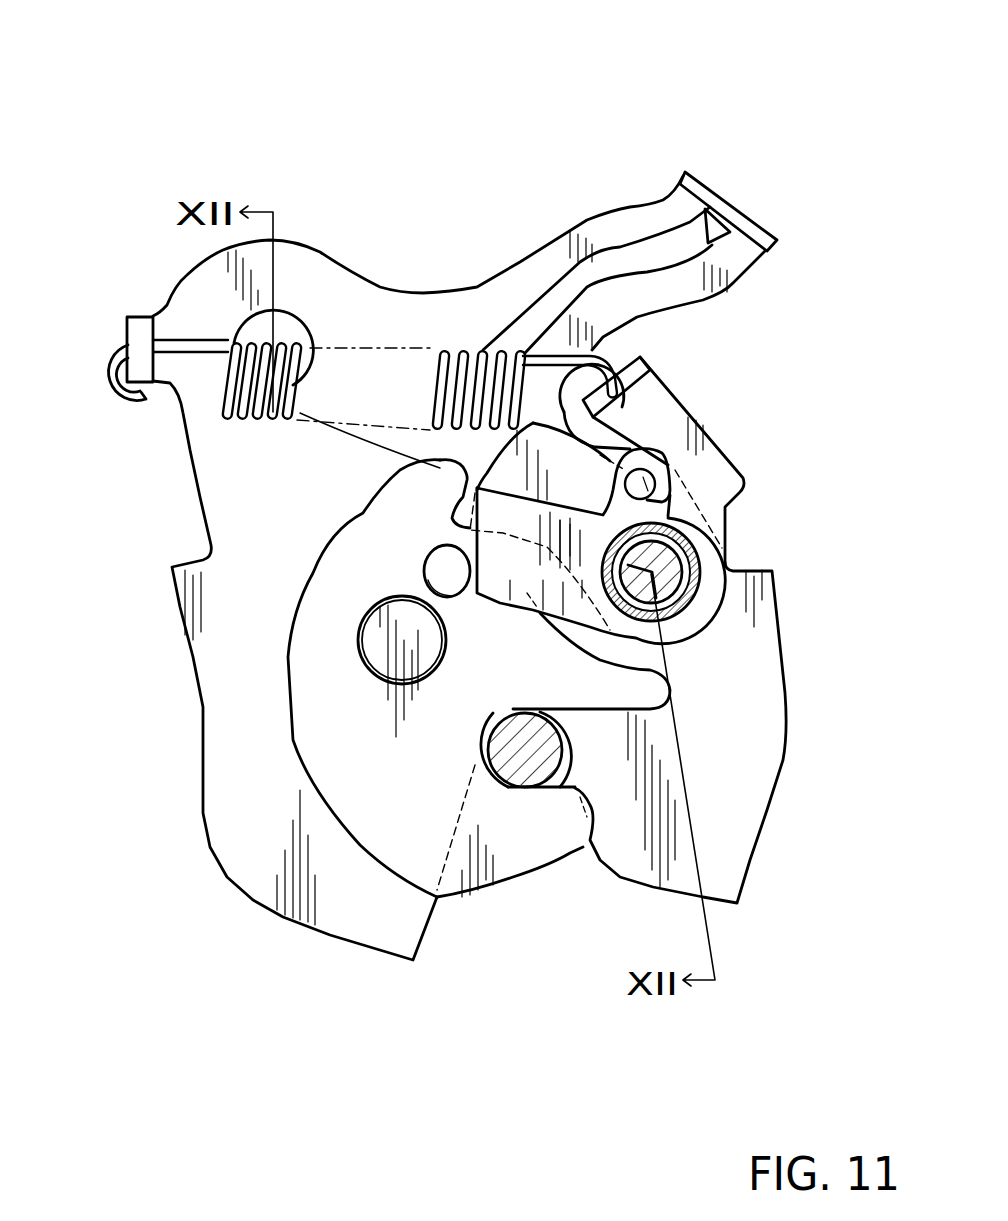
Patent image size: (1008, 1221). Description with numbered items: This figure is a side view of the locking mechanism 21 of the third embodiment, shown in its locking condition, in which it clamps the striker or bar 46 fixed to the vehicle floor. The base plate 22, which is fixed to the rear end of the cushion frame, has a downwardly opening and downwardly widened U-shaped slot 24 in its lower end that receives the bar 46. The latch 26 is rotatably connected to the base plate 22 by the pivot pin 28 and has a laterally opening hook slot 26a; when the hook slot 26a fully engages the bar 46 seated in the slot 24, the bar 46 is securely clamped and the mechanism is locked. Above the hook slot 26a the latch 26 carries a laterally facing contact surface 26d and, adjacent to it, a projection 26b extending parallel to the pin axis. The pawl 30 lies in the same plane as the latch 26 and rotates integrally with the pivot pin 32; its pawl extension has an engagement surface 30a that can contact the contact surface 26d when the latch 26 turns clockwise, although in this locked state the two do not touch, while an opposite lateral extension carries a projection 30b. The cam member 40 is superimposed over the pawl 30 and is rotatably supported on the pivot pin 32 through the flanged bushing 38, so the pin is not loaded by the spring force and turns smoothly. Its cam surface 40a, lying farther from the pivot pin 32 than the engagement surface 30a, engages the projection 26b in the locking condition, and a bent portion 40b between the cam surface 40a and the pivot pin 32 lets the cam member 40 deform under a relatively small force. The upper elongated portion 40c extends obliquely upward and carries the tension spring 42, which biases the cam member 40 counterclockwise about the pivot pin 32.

The locking mechanism 21 is at (132, 94).
The base plate 22 is at (240, 496).
The U-shaped slot 24 is at (563, 790).
The latch 26 is at (330, 775).
The hook slot 26a is at (485, 733).
The projection 26b is at (440, 571).
The contact surface 26d is at (437, 488).
The pivot pin 28 is at (390, 653).
The pawl 30 is at (570, 465).
The engagement surface 30a is at (460, 488).
The projection 30b is at (642, 470).
The pivot pin 32 is at (662, 572).
The flanged bushing 38 is at (683, 610).
The cam member 40 is at (697, 525).
The cam surface 40a is at (465, 537).
The bent portion 40b is at (553, 573).
The upper elongated portion 40c is at (663, 413).
The tension spring 42 is at (472, 347).
The bar 46 is at (513, 787).